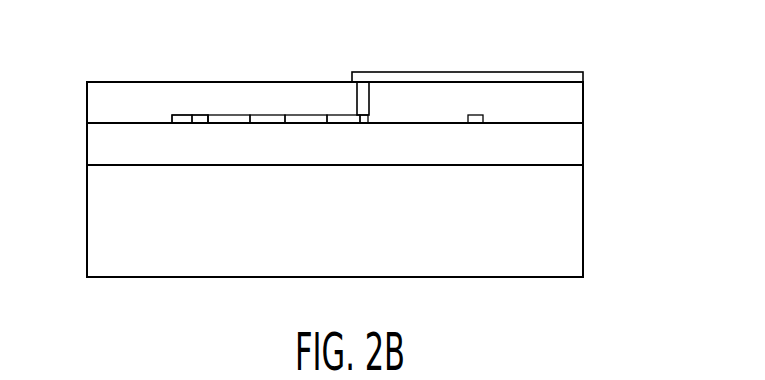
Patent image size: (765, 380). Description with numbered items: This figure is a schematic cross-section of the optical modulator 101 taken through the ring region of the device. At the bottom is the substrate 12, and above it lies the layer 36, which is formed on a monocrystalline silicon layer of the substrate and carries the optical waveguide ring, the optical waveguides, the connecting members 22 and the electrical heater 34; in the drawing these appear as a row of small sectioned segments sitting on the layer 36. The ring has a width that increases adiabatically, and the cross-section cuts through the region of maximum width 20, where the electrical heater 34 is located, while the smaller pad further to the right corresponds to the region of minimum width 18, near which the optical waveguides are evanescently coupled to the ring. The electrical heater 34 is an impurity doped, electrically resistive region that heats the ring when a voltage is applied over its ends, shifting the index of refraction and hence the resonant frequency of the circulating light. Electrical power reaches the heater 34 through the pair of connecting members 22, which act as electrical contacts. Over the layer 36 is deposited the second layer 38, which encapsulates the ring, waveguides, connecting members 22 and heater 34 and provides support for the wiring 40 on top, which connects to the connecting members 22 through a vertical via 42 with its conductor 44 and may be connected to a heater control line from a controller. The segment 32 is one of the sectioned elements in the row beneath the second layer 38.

The substrate 12 is at (133, 265).
The minimum width 18 is at (484, 118).
The maximum width 20 is at (208, 126).
The connecting members 22 is at (366, 126).
The conductive segment 32 is at (170, 118).
The electrical heater 34 is at (197, 115).
The layer 36 is at (133, 158).
The second layer 38 is at (133, 114).
The wiring 40 is at (476, 72).
The via 42 is at (370, 87).
The via conductor 44 is at (357, 102).
The optical modulator 101 is at (650, 59).